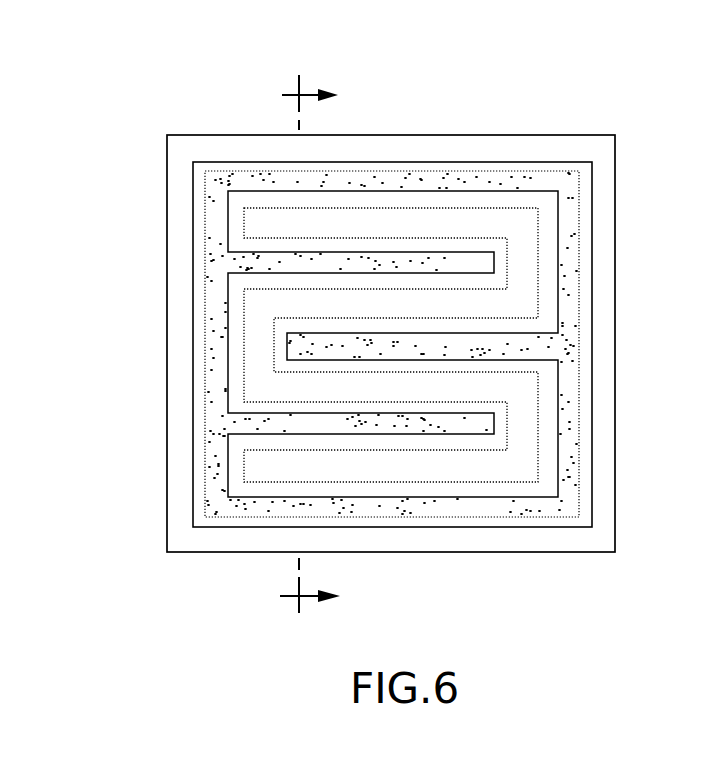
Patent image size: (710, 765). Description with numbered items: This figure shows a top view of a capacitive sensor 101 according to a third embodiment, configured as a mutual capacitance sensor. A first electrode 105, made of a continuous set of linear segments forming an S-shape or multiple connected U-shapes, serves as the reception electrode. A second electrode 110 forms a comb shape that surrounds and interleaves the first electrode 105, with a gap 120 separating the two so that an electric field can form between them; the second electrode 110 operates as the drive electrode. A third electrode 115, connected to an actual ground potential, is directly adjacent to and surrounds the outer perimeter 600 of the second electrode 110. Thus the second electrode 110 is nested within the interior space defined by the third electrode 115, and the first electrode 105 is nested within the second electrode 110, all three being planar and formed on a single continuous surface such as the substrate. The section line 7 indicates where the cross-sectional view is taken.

The sensor device 101 is at (145, 90).
The electrode trace 105 is at (508, 226).
The substrate 110 is at (386, 178).
The housing frame 115 is at (581, 145).
The channel 120 is at (541, 324).
The seal layer 600 is at (596, 408).
The section line 7- 7 is at (310, 346).